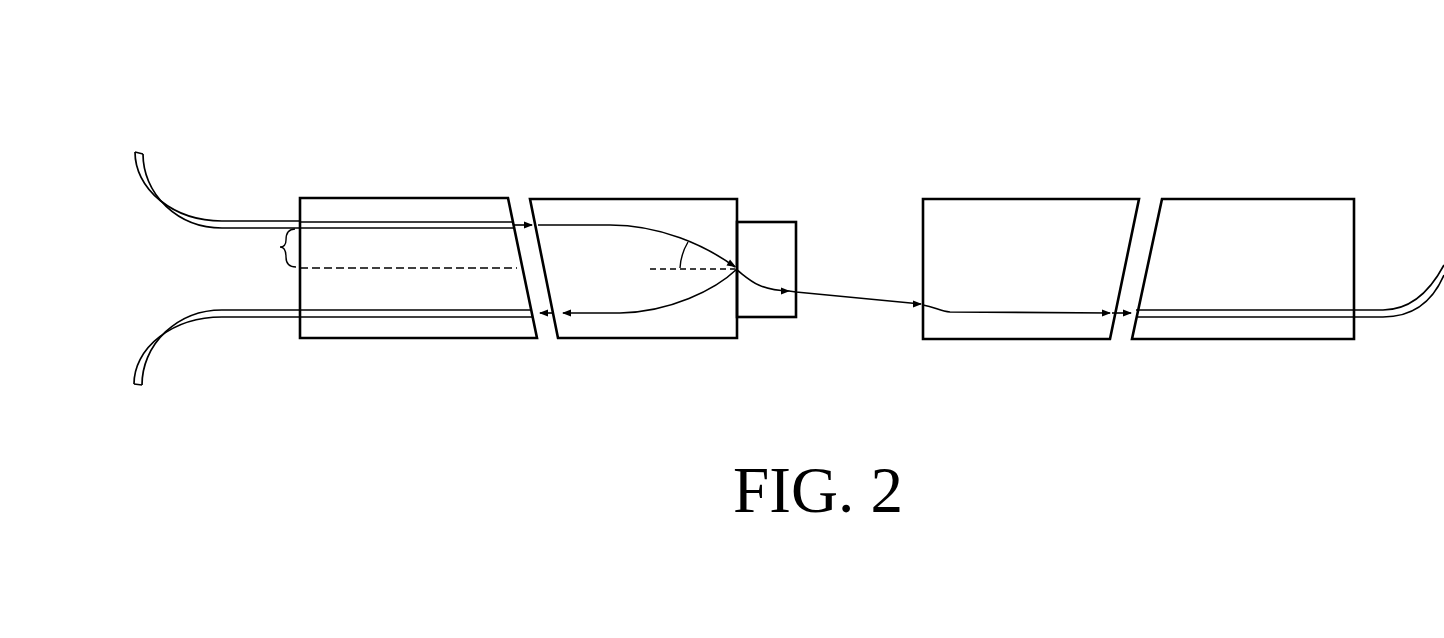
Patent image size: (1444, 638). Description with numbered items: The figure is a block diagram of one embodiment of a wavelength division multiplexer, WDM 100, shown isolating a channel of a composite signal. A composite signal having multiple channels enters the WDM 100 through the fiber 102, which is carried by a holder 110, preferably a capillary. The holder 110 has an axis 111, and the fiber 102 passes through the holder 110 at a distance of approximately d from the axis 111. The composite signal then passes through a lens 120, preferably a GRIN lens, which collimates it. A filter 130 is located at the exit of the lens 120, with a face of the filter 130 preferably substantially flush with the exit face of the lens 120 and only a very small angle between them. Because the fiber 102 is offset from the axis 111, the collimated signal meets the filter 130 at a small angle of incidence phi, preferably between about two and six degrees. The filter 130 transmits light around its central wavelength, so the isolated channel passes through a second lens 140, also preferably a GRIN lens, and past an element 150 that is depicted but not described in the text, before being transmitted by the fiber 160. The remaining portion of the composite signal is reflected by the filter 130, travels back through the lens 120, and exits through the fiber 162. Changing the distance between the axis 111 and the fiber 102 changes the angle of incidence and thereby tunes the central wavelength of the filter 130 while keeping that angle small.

The wavelength division multiplexer 100 is at (852, 50).
The fiber 102 is at (143, 183).
The holder 110 is at (403, 198).
The axis 111 is at (300, 267).
The lens 120 is at (615, 199).
The filter 130 is at (772, 222).
The second lens 140 is at (1013, 199).
The fourth lens 150 is at (1247, 199).
The fiber 160 is at (1405, 320).
The fiber 162 is at (257, 318).